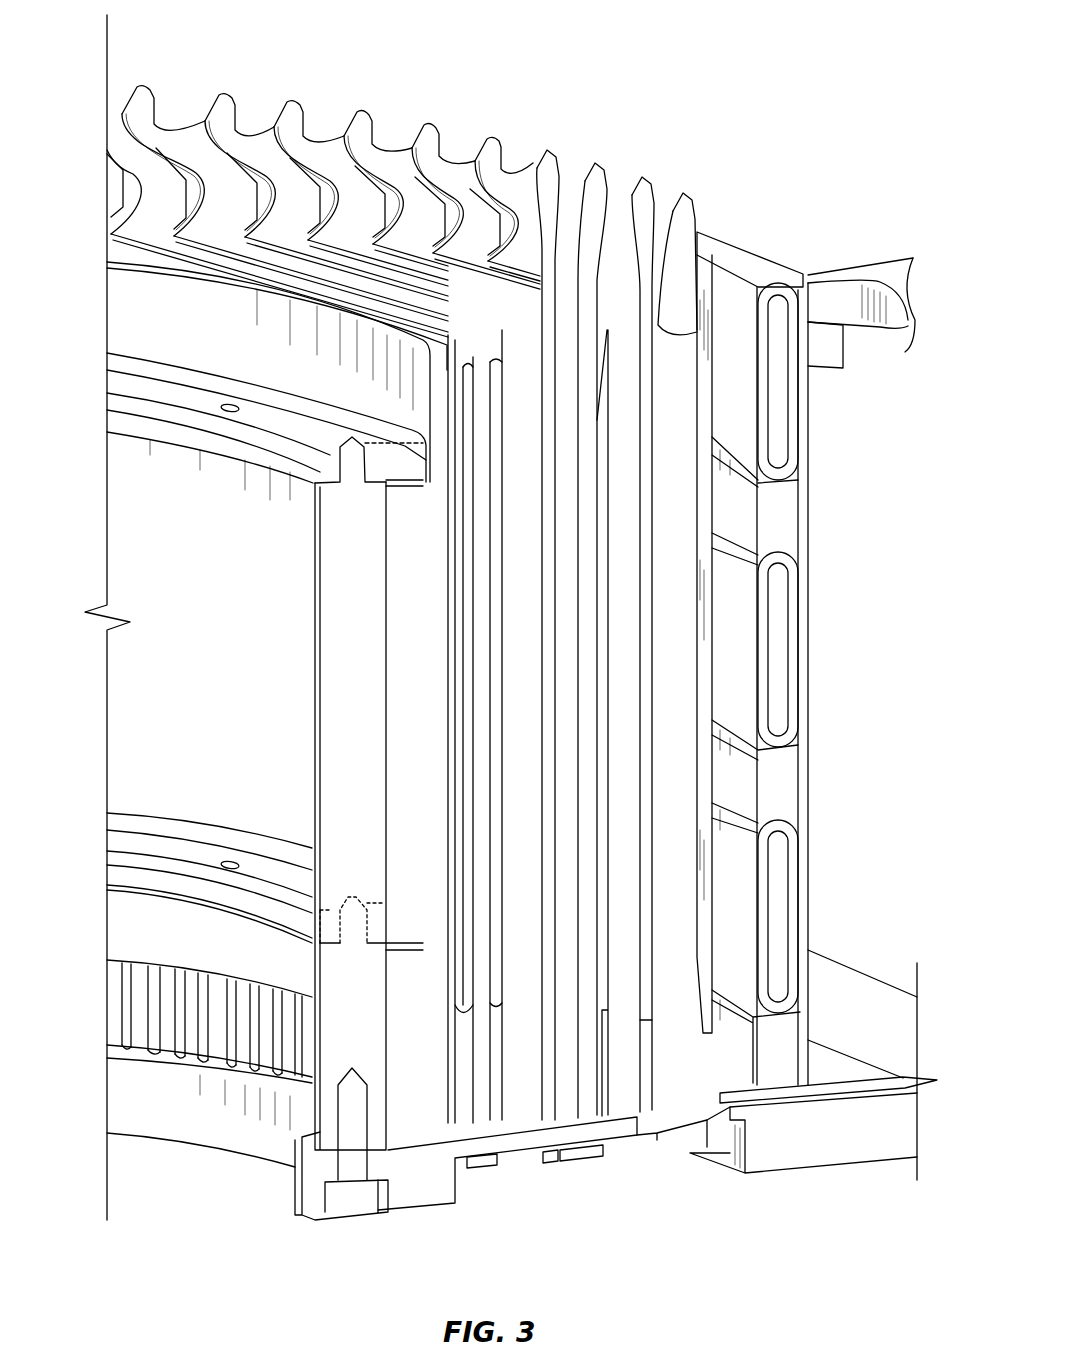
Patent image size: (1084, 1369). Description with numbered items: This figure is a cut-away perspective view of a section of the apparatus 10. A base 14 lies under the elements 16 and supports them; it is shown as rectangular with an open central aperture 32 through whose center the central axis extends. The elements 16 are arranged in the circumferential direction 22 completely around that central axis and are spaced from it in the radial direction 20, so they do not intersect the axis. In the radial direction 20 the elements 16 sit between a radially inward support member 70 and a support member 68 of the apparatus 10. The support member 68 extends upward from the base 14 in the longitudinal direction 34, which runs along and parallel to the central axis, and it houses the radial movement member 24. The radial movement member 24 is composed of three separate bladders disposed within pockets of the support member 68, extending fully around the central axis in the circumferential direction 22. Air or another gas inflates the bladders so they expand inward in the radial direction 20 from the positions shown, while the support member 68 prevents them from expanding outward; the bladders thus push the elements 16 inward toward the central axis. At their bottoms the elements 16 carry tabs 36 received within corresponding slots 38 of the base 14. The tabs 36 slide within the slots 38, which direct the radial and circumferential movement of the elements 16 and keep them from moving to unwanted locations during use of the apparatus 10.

The apparatus 10 is at (760, 48).
The base 14 is at (827, 1063).
The elements 16 is at (543, 200).
The radial direction 20 is at (378, 1228).
The circumferential direction 22 is at (222, 50).
The radial movement member 24 is at (795, 932).
The central aperture 32 is at (226, 1162).
The longitudinal direction 34 is at (846, 757).
The tabs 36 is at (578, 1157).
The slots 38 is at (550, 1155).
The support member 68 is at (812, 853).
The radially inward support member 70 is at (130, 737).